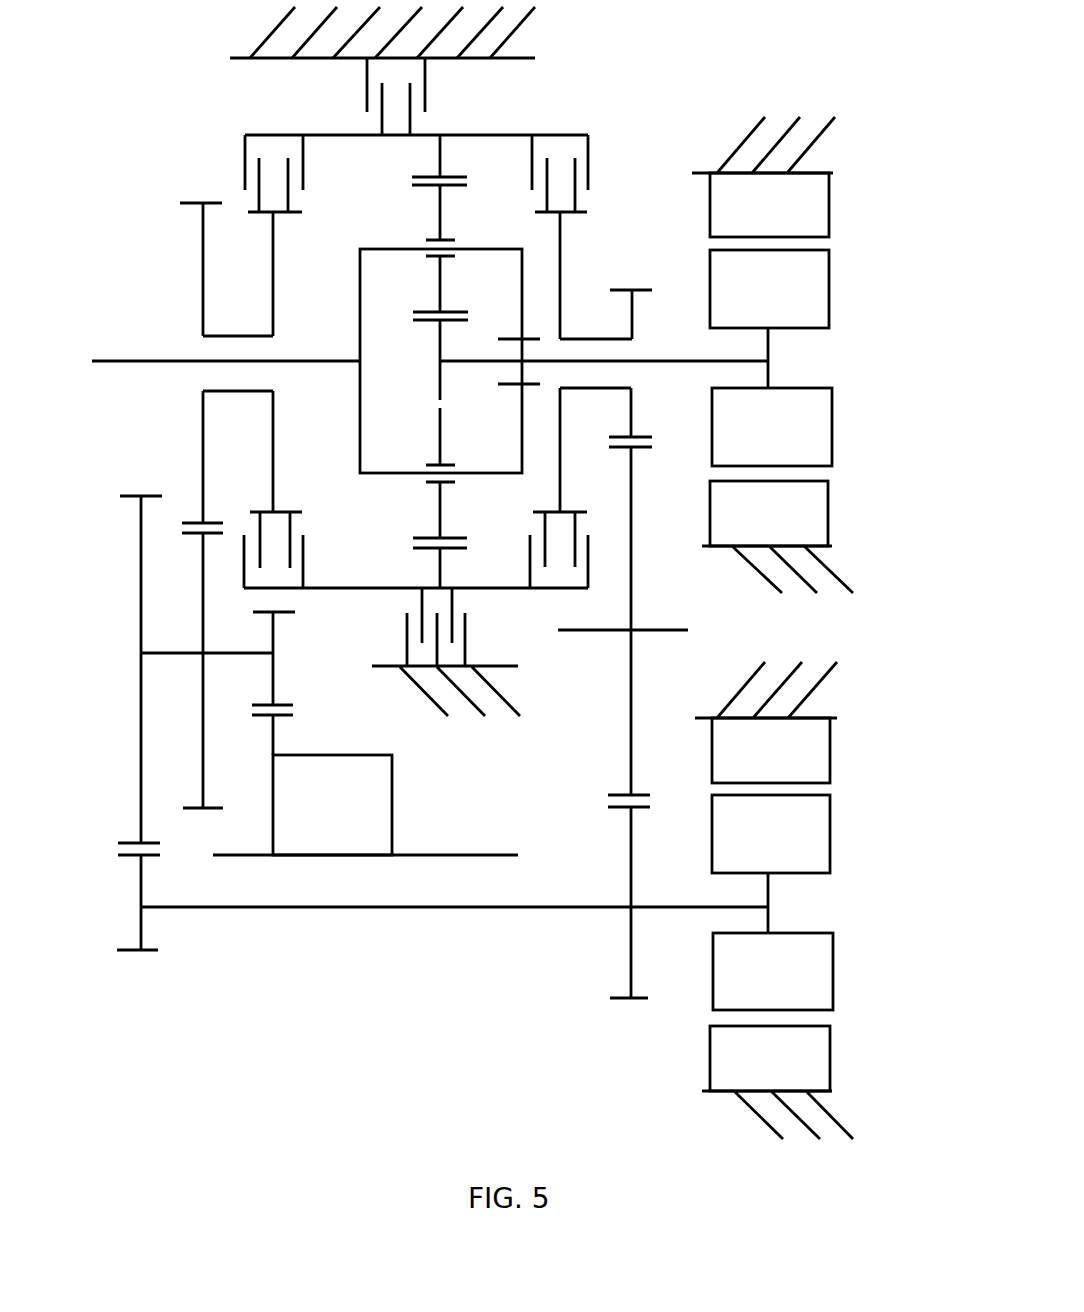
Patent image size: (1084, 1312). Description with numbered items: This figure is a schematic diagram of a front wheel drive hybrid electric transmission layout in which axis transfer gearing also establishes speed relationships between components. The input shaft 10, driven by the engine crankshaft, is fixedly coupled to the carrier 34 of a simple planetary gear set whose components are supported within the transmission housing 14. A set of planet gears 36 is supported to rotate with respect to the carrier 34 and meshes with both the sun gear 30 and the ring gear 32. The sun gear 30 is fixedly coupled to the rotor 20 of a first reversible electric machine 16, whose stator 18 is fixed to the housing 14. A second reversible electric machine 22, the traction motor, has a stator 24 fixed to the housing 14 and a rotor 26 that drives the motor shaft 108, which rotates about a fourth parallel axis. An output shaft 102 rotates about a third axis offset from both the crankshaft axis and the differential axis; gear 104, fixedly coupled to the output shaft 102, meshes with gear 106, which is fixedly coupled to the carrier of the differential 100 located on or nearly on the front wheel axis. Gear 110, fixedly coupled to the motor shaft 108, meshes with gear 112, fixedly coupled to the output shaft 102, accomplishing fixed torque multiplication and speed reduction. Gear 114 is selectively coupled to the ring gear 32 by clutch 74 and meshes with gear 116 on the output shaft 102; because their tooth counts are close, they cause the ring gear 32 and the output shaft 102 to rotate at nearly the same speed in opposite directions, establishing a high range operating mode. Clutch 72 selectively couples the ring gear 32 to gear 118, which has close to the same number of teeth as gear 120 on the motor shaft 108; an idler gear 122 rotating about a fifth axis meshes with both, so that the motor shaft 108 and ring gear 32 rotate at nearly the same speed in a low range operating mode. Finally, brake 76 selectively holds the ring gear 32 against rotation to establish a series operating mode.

The input shaft 10 is at (135, 358).
The transmission housing 14 is at (513, 27).
The first reversible electric machine 16 is at (763, 158).
The stator 18 is at (830, 520).
The rotor 20 is at (830, 300).
The second reversible electric machine 22 is at (766, 704).
The stator 24 is at (828, 1055).
The rotor 26 is at (832, 845).
The sun gear 30 is at (442, 347).
The ring gear 32 is at (438, 148).
The carrier 34 is at (360, 282).
The planet gears 36 is at (443, 218).
The clutch 72 is at (588, 168).
The clutch 74 is at (243, 163).
The brake 76 is at (425, 87).
The differential 100 is at (392, 802).
The output shaft 102 is at (162, 652).
The gear 104 is at (273, 678).
The gear 106 is at (273, 742).
The motor shaft 108 is at (403, 908).
The gear 110 is at (140, 925).
The gear 112 is at (142, 538).
The gear 114 is at (202, 463).
The gear 116 is at (202, 697).
The gear 118 is at (632, 328).
The gear 120 is at (630, 853).
The idler gear 122 is at (632, 573).